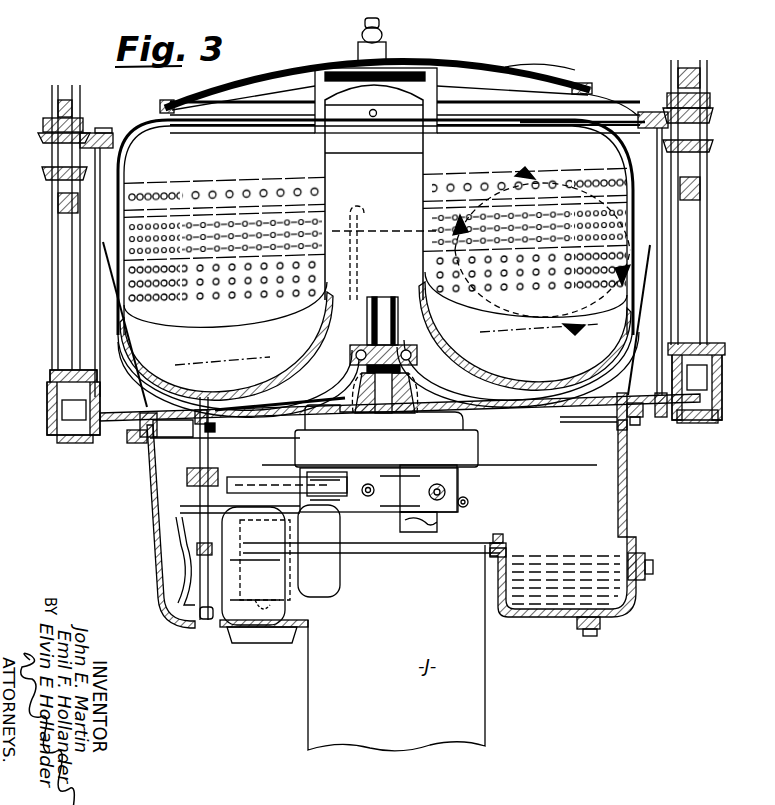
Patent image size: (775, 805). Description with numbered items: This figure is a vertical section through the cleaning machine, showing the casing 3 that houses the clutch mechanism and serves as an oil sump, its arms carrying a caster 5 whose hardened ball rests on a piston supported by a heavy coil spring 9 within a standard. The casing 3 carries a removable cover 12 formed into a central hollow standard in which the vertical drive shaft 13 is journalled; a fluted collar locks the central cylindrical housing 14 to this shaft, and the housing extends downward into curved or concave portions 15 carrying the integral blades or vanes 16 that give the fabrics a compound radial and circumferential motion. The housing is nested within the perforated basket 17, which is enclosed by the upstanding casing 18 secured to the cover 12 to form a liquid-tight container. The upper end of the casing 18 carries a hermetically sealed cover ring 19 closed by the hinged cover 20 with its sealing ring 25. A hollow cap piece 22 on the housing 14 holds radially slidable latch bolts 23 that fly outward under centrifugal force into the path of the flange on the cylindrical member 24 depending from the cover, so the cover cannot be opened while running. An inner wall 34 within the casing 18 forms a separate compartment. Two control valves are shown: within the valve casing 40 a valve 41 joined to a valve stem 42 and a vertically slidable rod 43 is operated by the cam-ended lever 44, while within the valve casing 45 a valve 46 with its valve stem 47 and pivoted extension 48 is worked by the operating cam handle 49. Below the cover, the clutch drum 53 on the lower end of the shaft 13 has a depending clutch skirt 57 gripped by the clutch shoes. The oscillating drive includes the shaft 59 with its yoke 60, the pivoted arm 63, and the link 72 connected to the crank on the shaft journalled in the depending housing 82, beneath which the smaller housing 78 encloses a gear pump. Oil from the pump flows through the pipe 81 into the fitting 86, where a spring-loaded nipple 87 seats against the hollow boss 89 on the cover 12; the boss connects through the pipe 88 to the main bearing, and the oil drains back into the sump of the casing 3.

The casing 3 is at (630, 507).
The caster 5 is at (199, 372).
The coil spring 9 is at (45, 405).
The removable cover 12 is at (560, 398).
The vertical drive shaft 13 is at (378, 312).
The central cylindrical housing 14 is at (421, 162).
The curved or concave portions 15 is at (226, 394).
The blades or vanes 16 is at (250, 345).
The perforated basket or container 17 is at (126, 186).
The upstanding casing or housing 18 is at (676, 320).
The cover ring 19 is at (622, 110).
The cover 20 is at (518, 74).
The hollow cap piece 22 is at (410, 134).
The latch bolts 23 is at (370, 116).
The cylindrical member 24 is at (440, 86).
The sealing ring 25 is at (583, 86).
The inner wall 34 is at (132, 385).
The valve casing 40 is at (55, 432).
The valve 41 is at (86, 442).
The valve stem 42 is at (72, 312).
The vertically slidable rod 43 is at (60, 190).
The lever 44 is at (80, 100).
The valve casing 45 is at (726, 402).
The valve 46 is at (704, 420).
The valve stem 47 is at (704, 278).
The extension 48 is at (707, 168).
The operating cam handle 49 is at (700, 74).
The clutch drum or transmission member 53 is at (468, 414).
The clutch skirt or annular flange 57 is at (480, 447).
The shaft 59 is at (402, 556).
The yoke 60 is at (443, 528).
The arm 63 is at (395, 472).
The link 72 is at (275, 478).
The smaller housing 78 is at (295, 625).
The pipe 81 is at (202, 585).
The depending housing 82 is at (330, 602).
The fitting 86 is at (214, 465).
The nipple 87 is at (204, 446).
The pipe 88 is at (275, 414).
The hollow boss 89 is at (196, 429).